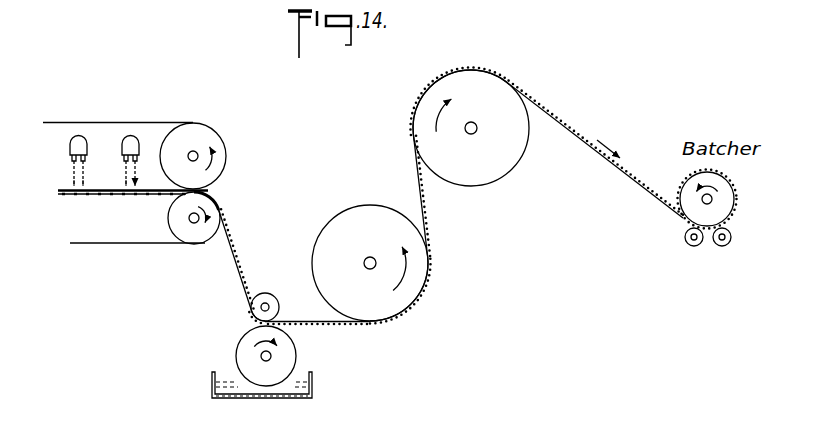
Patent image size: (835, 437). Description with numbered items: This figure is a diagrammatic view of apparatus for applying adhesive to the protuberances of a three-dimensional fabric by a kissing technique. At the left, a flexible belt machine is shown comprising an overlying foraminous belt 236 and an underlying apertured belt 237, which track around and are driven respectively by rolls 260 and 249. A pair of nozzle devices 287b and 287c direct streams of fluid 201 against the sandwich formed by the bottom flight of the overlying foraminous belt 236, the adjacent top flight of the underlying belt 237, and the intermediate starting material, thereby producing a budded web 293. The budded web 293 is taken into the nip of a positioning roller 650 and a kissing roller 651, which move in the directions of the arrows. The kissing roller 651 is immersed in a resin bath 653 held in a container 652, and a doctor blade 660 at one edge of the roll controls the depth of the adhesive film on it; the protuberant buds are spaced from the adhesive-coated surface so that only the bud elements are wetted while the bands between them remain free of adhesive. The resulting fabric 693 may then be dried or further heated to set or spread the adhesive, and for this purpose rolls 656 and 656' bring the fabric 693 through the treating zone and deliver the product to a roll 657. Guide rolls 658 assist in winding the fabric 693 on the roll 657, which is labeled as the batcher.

The streams of fluid 201 is at (132, 177).
The overlying foraminous belt 236 is at (173, 112).
The underlying apertured belt 237 is at (88, 248).
The roll 249 is at (191, 234).
The roll 260 is at (200, 137).
The nozzle device 287b is at (67, 152).
The nozzle device 287c is at (131, 134).
The budded web 293 is at (232, 250).
The positioning roller 650 is at (279, 281).
The kissing roller 651 is at (289, 355).
The container 652 is at (290, 398).
The resin bath 653 is at (213, 382).
The roll 656 is at (370, 248).
The roll 656' is at (471, 138).
The roll 657 is at (722, 206).
The guide rolls 658 is at (694, 246).
The doctor blade 660 is at (225, 377).
The fabric 693 is at (337, 326).